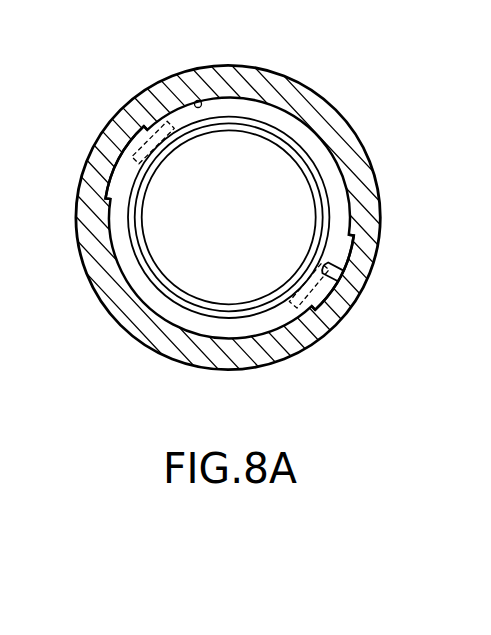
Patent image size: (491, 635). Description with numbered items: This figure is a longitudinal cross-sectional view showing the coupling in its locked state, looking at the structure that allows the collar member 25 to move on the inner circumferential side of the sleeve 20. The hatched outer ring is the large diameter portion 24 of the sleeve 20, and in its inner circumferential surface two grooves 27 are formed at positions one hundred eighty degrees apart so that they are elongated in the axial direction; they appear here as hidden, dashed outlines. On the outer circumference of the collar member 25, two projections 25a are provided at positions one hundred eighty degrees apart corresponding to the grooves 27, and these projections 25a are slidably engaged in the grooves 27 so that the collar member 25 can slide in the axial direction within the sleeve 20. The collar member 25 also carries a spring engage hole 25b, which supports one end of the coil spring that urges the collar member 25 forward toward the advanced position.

The sleeve 20 is at (334, 102).
The large diameter portion 24 is at (197, 100).
The collar member 25 is at (343, 178).
The projections 25a is at (139, 134).
The spring engage hole 25b is at (338, 276).
The grooves 27 is at (118, 171).